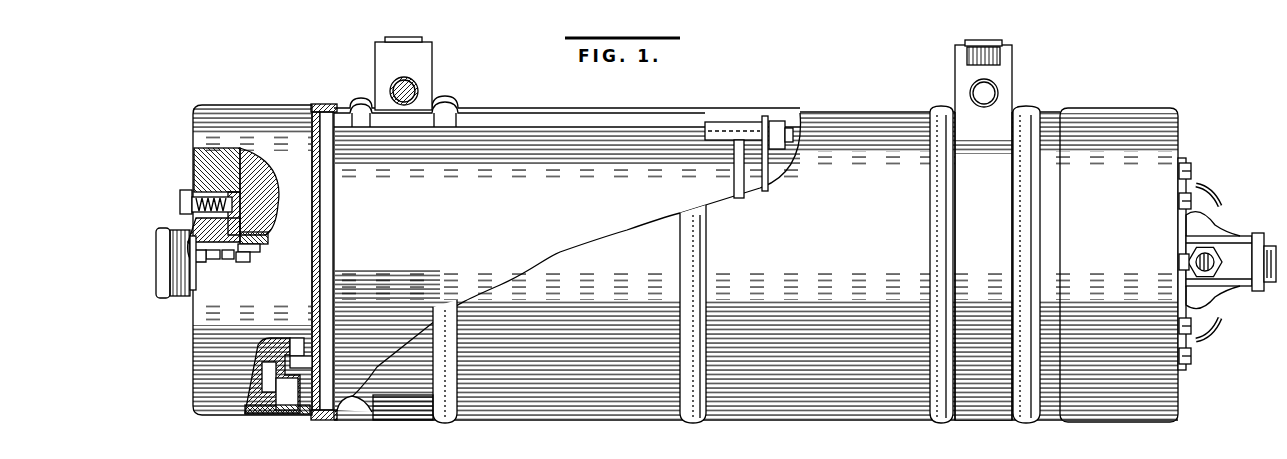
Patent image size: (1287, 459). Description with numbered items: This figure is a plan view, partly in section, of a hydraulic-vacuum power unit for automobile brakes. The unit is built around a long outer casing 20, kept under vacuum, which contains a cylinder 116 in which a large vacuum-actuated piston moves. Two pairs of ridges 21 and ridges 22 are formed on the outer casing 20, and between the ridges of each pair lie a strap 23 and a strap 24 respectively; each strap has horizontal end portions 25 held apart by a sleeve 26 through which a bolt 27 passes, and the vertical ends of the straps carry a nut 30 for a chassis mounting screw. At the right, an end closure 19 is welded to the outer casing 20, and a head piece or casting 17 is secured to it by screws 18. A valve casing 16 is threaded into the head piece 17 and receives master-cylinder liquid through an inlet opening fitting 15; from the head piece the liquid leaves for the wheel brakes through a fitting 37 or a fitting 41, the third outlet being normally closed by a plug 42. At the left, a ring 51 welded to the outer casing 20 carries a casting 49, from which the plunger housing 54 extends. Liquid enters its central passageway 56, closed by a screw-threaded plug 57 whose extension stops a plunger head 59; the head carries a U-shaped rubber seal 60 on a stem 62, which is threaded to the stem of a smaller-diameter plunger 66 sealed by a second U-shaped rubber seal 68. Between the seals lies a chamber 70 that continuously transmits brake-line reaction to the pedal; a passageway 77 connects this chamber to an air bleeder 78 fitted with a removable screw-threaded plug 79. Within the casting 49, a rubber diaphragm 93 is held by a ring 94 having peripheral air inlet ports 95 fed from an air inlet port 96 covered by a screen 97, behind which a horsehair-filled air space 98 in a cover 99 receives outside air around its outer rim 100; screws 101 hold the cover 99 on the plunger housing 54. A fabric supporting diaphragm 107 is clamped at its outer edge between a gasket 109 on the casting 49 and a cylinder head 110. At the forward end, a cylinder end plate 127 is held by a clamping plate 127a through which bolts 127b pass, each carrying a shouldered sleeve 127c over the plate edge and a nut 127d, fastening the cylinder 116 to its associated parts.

The inlet opening fitting 15 is at (1270, 284).
The valve casing 16 is at (1258, 245).
The head piece or casting 17 is at (1238, 240).
The screws 18 is at (1188, 166).
The end closure 19 is at (1112, 128).
The outer casing 20 is at (790, 372).
The ridges 21 is at (355, 105).
The ridges 22 is at (940, 209).
The strap 23 is at (412, 390).
The strap 24 is at (990, 385).
The horizontal end portions 25 is at (385, 55).
The sleeve 26 is at (418, 93).
The bolt 27 is at (416, 84).
The nut 30 is at (975, 58).
The fitting 37 is at (1193, 256).
The fitting 41 is at (1216, 332).
The plug 42 is at (1222, 203).
The casting 49 is at (302, 421).
The ring 51 is at (320, 103).
The plunger housing 54 is at (180, 285).
The central passageway 56 is at (194, 226).
The screw-threaded plug 57 is at (162, 268).
The plunger head 59 is at (196, 262).
The U-shaped rubber seal 60 is at (214, 258).
The stem 62 is at (230, 259).
The smaller-diameter plunger 66 is at (258, 250).
The U-shaped rubber seal 68 is at (250, 256).
The chamber 70 is at (268, 238).
The passageway 77 is at (246, 216).
The air bleeder 78 is at (232, 182).
The removable screw-threaded plug 79 is at (181, 200).
The rubber diaphragm 93 is at (290, 343).
The ring 94 is at (262, 340).
The peripheral air inlet ports 95 is at (297, 345).
The air inlet port 96 is at (275, 420).
The screen 97 is at (256, 376).
The air space 98 is at (196, 158).
The cover 99 is at (228, 108).
The outer rim 100 is at (248, 418).
The screws 101 is at (190, 290).
The supporting diaphragm 107 is at (322, 185).
The gasket 109 is at (314, 160).
The cylinder head 110 is at (326, 215).
The cylinder 116 is at (572, 214).
The cylinder end plate 127 is at (738, 190).
The clamping plate 127a is at (768, 165).
The bolts 127b is at (502, 128).
The shouldered sleeves 127c is at (726, 130).
The nuts 127d is at (777, 121).